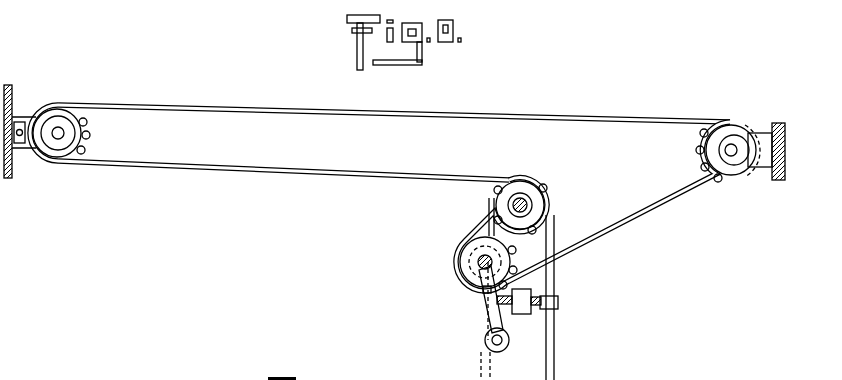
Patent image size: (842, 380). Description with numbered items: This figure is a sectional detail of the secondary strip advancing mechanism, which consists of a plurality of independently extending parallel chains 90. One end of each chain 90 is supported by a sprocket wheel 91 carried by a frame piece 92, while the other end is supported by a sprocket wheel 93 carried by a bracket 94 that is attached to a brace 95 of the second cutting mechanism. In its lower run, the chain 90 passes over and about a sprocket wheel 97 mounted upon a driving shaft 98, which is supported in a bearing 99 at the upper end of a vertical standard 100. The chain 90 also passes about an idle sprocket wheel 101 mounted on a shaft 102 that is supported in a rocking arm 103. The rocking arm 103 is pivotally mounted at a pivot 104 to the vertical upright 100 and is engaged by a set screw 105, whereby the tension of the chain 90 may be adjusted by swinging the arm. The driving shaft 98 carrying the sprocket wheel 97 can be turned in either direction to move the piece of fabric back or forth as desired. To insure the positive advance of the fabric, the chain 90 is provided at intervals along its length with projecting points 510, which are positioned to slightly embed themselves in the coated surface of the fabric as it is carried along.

The chain 90 is at (511, 116).
The sprocket wheel 91 is at (706, 154).
The frame piece 92 is at (777, 124).
The sprocket wheel 93 is at (78, 130).
The bracket 94 is at (46, 140).
The brace 95 is at (12, 106).
The sprocket wheel 97 is at (523, 188).
The driving shaft 98 is at (536, 206).
The bearing 99 is at (488, 200).
The vertical standard 100 is at (541, 340).
The idle sprocket wheel 101 is at (494, 289).
The shaft 102 is at (476, 265).
The rocking arm 103 is at (486, 323).
The pivot 104 is at (491, 343).
The set screw 105 is at (556, 303).
The projecting point 510 is at (313, 109).